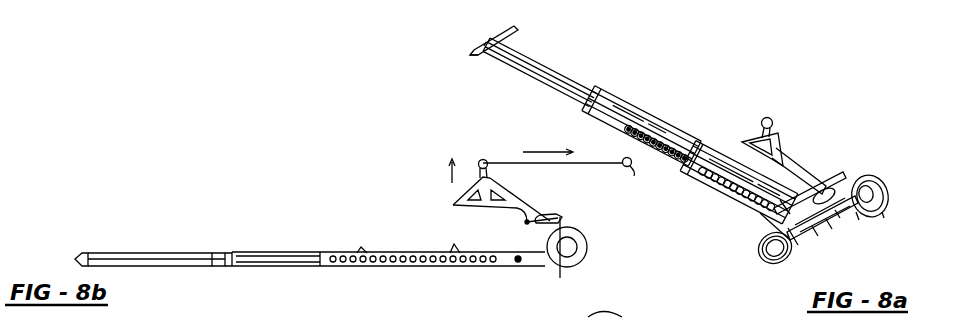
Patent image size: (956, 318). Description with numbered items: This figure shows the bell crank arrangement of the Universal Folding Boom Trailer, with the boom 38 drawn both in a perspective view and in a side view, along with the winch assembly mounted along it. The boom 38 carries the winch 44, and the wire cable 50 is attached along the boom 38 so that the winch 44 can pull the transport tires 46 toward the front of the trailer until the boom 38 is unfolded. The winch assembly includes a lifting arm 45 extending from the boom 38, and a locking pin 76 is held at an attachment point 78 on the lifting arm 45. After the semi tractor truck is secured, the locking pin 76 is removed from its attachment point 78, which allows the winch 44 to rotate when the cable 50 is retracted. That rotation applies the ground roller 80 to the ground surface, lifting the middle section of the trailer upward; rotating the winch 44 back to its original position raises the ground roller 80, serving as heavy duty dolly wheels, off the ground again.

In FIG. 8A, the boom 38 is at (558, 70).
In FIG. 8B, the boom 38 is at (155, 258).
In FIG. 8B, the winch 44 is at (638, 170).
In FIG. 8A, the lifting arm 45 is at (792, 164).
In FIG. 8B, the lifting arm 45 is at (453, 208).
In FIG. 8A, the transport tires 46 is at (783, 272).
In FIG. 8B, the transport tires 46 is at (585, 262).
In FIG. 8B, the wire cable 50 is at (518, 164).
In FIG. 8B, the locking pin 76 is at (527, 226).
In FIG. 8B, the attachment point 78 is at (518, 263).
In FIG. 8B, the ground roller 80 is at (562, 218).